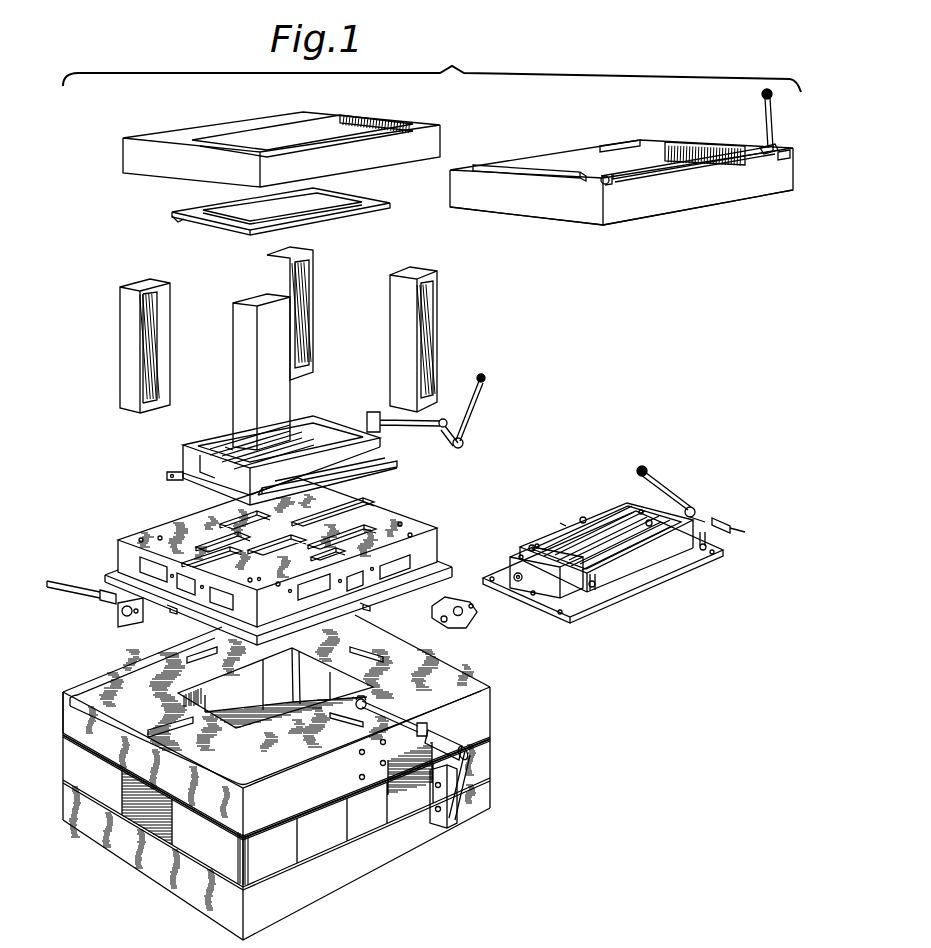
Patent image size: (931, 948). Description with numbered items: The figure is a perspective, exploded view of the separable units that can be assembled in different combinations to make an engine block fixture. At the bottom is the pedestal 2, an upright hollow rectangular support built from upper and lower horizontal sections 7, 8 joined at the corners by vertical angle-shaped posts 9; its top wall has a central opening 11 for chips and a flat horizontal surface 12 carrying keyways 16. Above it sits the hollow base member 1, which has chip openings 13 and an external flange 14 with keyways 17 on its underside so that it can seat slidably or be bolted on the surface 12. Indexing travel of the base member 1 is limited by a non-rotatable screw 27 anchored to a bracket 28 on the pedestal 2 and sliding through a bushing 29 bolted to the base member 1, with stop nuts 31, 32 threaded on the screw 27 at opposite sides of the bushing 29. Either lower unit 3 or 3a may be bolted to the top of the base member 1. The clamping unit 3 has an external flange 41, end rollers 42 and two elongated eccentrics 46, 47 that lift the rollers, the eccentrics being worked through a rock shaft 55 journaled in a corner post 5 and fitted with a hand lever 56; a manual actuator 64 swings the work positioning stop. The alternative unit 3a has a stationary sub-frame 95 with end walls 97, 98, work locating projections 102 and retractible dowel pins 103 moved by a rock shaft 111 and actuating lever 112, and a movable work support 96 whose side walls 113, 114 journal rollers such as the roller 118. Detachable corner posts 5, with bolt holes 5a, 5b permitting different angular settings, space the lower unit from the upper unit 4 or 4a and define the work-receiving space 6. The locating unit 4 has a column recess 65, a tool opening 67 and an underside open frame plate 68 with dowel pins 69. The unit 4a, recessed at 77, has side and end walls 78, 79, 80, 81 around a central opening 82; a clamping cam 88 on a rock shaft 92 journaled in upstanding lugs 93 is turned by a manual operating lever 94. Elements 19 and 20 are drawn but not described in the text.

The base member 1 is at (286, 552).
The pedestal 2 is at (282, 777).
The clamping unit 3 is at (322, 439).
The unit 3a is at (611, 547).
The work locating unit 4 is at (162, 170).
The unit 4a is at (523, 213).
The corner posts 5 is at (117, 360).
The bolt holes 5a is at (161, 536).
The bolt holes 5b is at (139, 538).
The space 6 is at (258, 580).
The upper horizontal section 7 is at (62, 706).
The lower horizontal section 8 is at (64, 806).
The vertical angle-shaped posts 9 is at (70, 756).
The central opening 11 is at (268, 664).
The flat horizontal surface 12 is at (125, 685).
The openings 13 is at (325, 507).
The external flange 14 is at (205, 615).
The keyways 16 is at (380, 650).
The keyways 17 is at (170, 612).
The bracket 19 is at (133, 618).
The rod 20 is at (84, 594).
The non-rotatable screw 27 is at (392, 730).
The bracket 28 is at (470, 742).
The bushing 29 is at (455, 627).
The stop nut 31 is at (432, 733).
The stop nut 32 is at (356, 701).
The external flange 41 is at (168, 476).
The end rollers 42 is at (210, 442).
The eccentric 46 is at (203, 440).
The eccentric 47 is at (312, 432).
The rock shaft 55 is at (449, 447).
The hand lever 56 is at (482, 430).
The manual actuator 64 is at (426, 421).
The recess 65 is at (264, 136).
The opening 67 is at (323, 132).
The open frame plate 68 is at (392, 205).
The dowel pins 69 is at (188, 226).
The recess 77 is at (612, 150).
The side wall 78 is at (595, 166).
The wall 79 is at (690, 198).
The end wall 80 is at (572, 215).
The end wall 81 is at (746, 149).
The central opening 82 is at (690, 143).
The clamping cam 88 is at (790, 158).
The rock shaft 92 is at (729, 164).
The upstanding lugs 93 is at (776, 148).
The manual operating lever 94 is at (773, 122).
The sub-frame 95 is at (620, 600).
The work support 96 is at (566, 518).
The end wall 97 is at (641, 510).
The end wall 98 is at (545, 593).
The work locating projections 102 is at (650, 520).
The retractible dowel pins 103 is at (520, 556).
The rock shaft 111 is at (678, 506).
The actuating lever 112 is at (670, 491).
The side wall 113 is at (665, 556).
The side wall 114 is at (545, 530).
The roller 118 is at (535, 545).